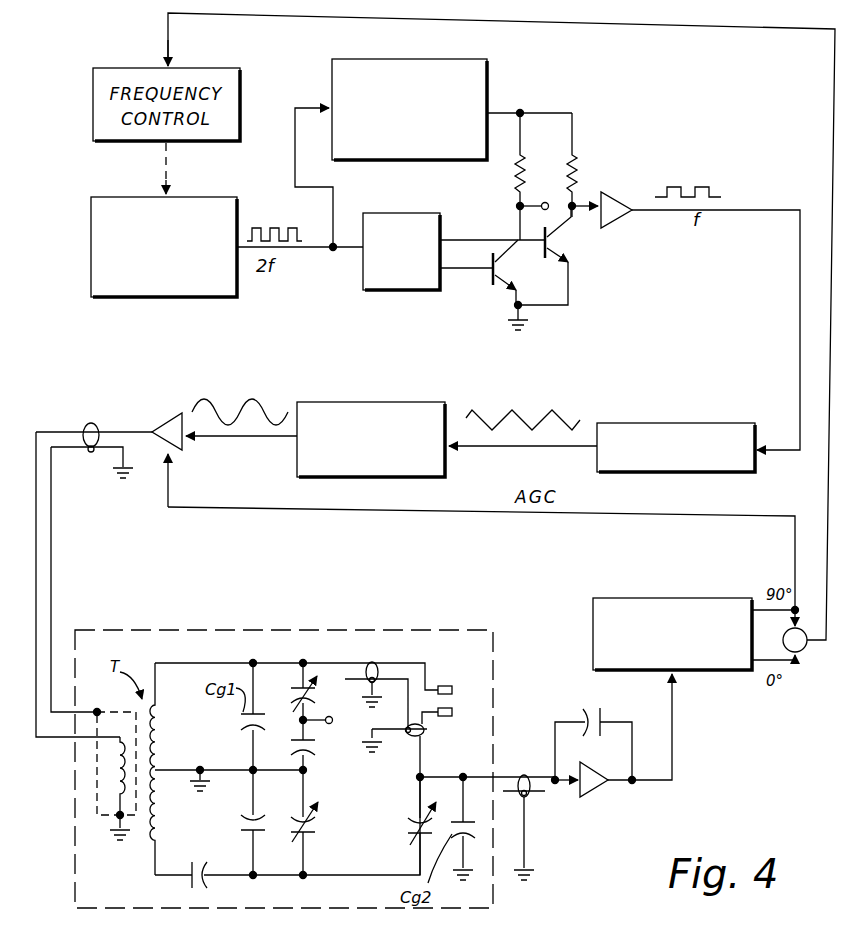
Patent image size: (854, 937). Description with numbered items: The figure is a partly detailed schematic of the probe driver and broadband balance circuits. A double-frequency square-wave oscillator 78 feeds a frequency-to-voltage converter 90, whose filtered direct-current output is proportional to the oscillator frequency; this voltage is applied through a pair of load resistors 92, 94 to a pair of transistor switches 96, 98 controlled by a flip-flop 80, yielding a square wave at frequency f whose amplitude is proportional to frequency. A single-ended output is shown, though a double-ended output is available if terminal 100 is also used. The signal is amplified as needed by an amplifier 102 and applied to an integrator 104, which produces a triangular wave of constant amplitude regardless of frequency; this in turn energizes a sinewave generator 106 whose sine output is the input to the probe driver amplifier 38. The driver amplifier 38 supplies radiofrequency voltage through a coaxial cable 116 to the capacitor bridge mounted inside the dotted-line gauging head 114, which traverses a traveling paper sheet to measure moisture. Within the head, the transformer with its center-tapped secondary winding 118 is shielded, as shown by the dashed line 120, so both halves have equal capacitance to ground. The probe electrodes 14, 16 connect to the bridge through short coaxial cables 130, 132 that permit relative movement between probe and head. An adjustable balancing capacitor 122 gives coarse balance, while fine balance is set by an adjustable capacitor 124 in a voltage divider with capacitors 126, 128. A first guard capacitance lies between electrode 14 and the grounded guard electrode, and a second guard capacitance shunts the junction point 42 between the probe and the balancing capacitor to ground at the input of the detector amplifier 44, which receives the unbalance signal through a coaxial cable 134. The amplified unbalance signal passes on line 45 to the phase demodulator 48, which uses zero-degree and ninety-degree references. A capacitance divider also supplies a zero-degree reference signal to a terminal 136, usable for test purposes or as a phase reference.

The oscillator 78 is at (158, 300).
The flip-flop 80 is at (405, 213).
The frequency-to-voltage converter 90 is at (492, 96).
The load resistor 92 is at (517, 172).
The load resistor 94 is at (576, 160).
The transistor switch 96 is at (511, 265).
The transistor switch 98 is at (565, 238).
The terminal 100 is at (548, 202).
The amplifier 102 is at (610, 192).
The integrator 104 is at (680, 423).
The sinewave generator 106 is at (372, 402).
The probe driver amplifier 38 is at (160, 428).
The phase demodulator 48 is at (676, 598).
The line 45 is at (673, 750).
The detector amplifier 44 is at (584, 797).
The coaxial cable 134 is at (523, 775).
The junction point 42 is at (464, 774).
The probe electrode 14 is at (450, 683).
The probe electrode 16 is at (453, 718).
The coaxial cable 132 is at (371, 662).
The coaxial cable 130 is at (410, 740).
The terminal 136 is at (331, 725).
The adjustable capacitor 124 is at (316, 826).
The balancing capacitor 122 is at (404, 828).
The transformer secondary winding 118 is at (160, 728).
The capacitor 128 is at (240, 826).
The capacitor 126 is at (203, 860).
The shield 120 is at (97, 793).
The coaxial cable 116 is at (54, 548).
The gauging head 114 is at (195, 628).